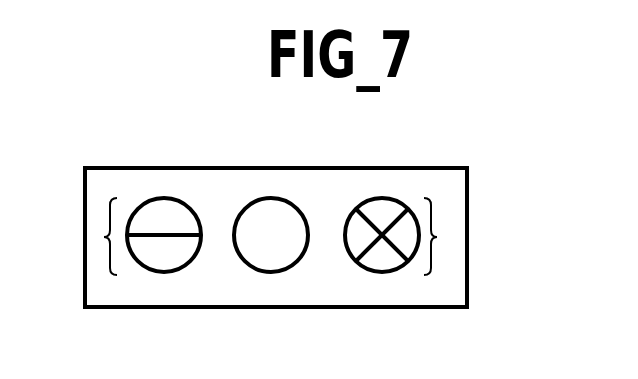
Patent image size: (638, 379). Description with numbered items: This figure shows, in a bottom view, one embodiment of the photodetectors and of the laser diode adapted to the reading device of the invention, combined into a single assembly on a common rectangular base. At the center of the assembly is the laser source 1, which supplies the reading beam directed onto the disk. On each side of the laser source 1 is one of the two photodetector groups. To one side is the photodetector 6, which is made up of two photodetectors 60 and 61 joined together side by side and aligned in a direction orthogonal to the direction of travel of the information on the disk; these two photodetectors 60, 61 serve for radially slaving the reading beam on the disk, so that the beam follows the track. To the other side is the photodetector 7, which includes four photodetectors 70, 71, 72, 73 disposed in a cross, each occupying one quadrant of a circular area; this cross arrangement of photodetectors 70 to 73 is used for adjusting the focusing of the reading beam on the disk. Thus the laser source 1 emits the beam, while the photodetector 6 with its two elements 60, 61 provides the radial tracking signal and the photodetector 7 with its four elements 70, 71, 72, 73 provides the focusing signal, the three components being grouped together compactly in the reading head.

The laser source 1 is at (270, 215).
The photodetector 6 is at (104, 237).
The photodetector 60 is at (162, 210).
The photodetector 61 is at (168, 263).
The photodetector 7 is at (437, 237).
The photodetector 70 is at (382, 212).
The photodetector 71 is at (410, 247).
The photodetector 72 is at (382, 263).
The photodetector 73 is at (347, 230).